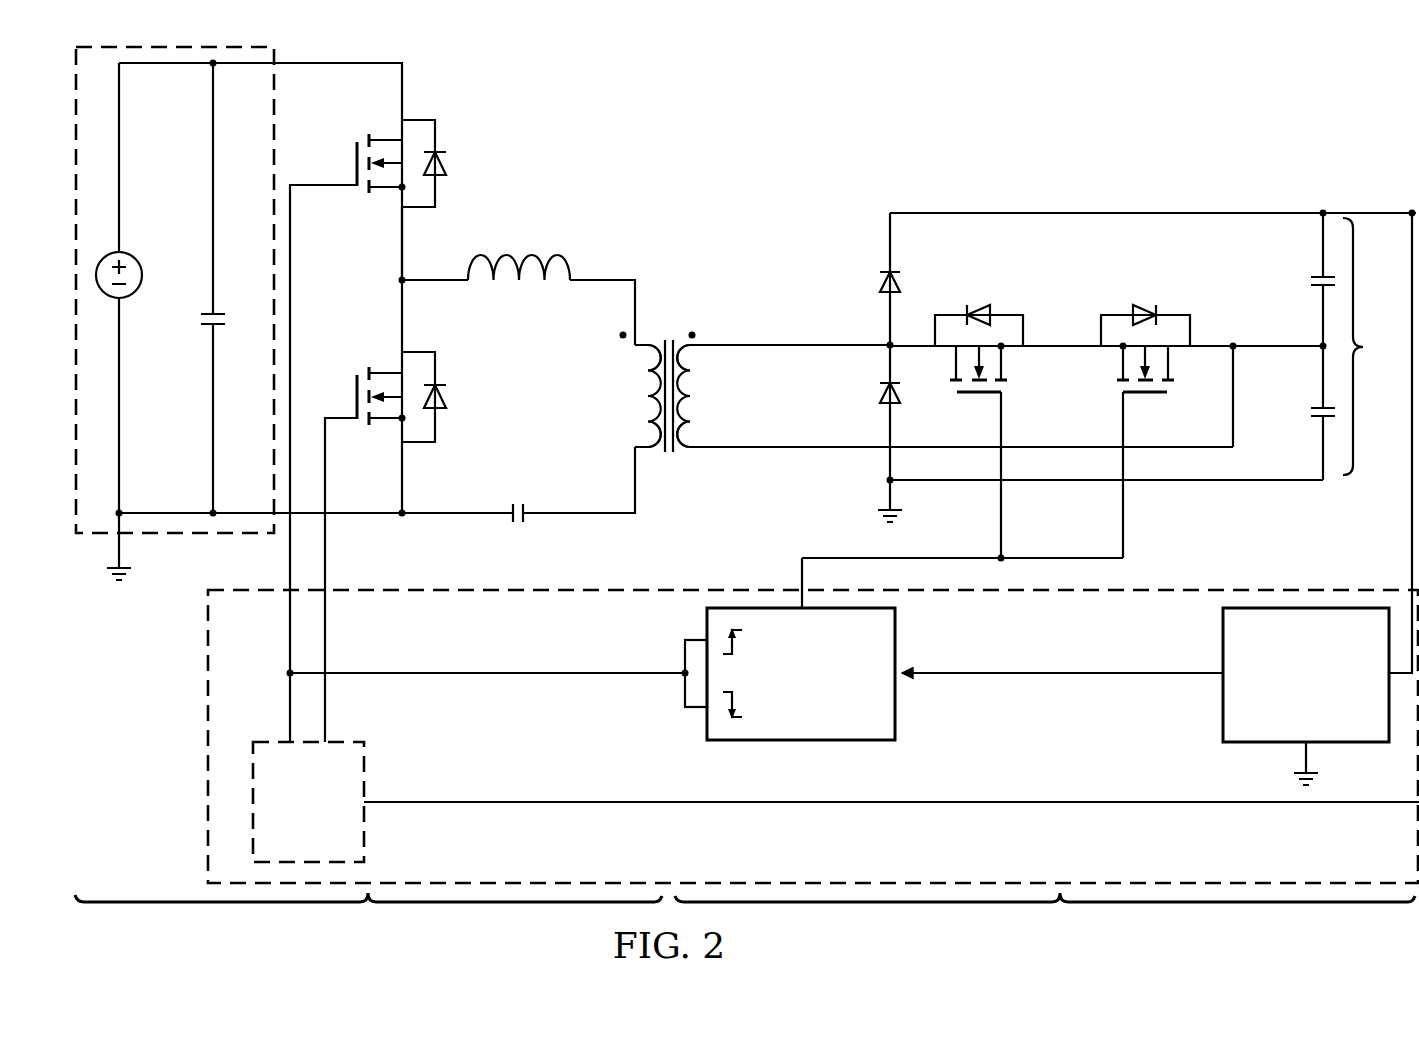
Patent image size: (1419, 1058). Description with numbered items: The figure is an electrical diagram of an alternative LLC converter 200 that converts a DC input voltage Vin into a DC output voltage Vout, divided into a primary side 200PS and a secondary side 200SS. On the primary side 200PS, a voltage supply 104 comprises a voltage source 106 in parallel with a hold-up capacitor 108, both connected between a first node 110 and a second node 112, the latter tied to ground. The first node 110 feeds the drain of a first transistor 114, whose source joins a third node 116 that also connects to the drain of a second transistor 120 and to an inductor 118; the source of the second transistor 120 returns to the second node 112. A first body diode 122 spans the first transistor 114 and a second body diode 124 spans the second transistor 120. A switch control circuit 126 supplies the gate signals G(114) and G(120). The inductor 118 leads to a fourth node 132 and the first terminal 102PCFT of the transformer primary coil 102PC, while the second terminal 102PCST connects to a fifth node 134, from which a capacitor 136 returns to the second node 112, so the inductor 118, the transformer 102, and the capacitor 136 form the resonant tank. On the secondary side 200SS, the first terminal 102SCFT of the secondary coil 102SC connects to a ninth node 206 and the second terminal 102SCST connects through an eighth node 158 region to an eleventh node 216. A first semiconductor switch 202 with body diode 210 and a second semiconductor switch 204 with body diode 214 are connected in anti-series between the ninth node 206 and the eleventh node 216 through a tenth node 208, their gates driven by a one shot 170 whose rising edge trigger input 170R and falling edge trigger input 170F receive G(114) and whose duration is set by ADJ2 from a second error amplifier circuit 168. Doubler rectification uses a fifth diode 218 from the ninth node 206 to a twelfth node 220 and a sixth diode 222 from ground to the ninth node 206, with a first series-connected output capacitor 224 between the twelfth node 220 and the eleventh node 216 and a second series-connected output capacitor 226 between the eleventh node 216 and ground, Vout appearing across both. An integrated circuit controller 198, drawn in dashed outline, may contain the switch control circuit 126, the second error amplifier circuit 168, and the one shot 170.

The transformer 102 is at (671, 360).
The transformer primary coil 102PC is at (650, 383).
The first terminal of the transformer primary coil 102PCFT is at (640, 350).
The second terminal of the transformer primary coil 102PCST is at (640, 444).
The transformer secondary coil 102SC is at (692, 384).
The first terminal of the transformer secondary coil 102SCFT is at (700, 350).
The second terminal of the transformer secondary coil 102SCST is at (700, 445).
The voltage supply 104 is at (282, 105).
The voltage source 106 is at (134, 257).
The capacitor 108 is at (201, 318).
The first node 110 is at (388, 63).
The second node 112 is at (165, 513).
The first transistor 114 is at (356, 155).
The third node 116 is at (400, 248).
The inductor 118 is at (530, 256).
The second transistor 120 is at (352, 378).
The first body diode 122 is at (447, 163).
The second body diode 124 is at (447, 426).
The switch control circuit 126 is at (371, 823).
The fourth node 132 is at (603, 280).
The fifth node 134 is at (582, 513).
The capacitor 136 is at (518, 503).
The eighth node 158 is at (758, 447).
The second error amplifier circuit 168 is at (1217, 703).
The one shot 170 is at (755, 655).
The rising edge trigger input 170R is at (707, 640).
The falling edge trigger input 170F is at (697, 708).
The integrated circuit controller 198 is at (203, 805).
The LLC converter 200 is at (1017, 108).
The primary side 200PS is at (368, 920).
The secondary side 200SS is at (1045, 920).
The first semiconductor switch 202 is at (1000, 394).
The second semiconductor switch 204 is at (1123, 403).
The ninth node 206 is at (758, 345).
The tenth node 208 is at (1058, 346).
The body diode 210 is at (975, 305).
The body diode 214 is at (1147, 305).
The eleventh node 216 is at (1263, 346).
The fifth diode 218 is at (880, 282).
The twelfth node 220 is at (1150, 213).
The sixth diode 222 is at (901, 395).
The first series-connected output capacitor 224 is at (1311, 282).
The second series-connected output capacitor 226 is at (1311, 412).